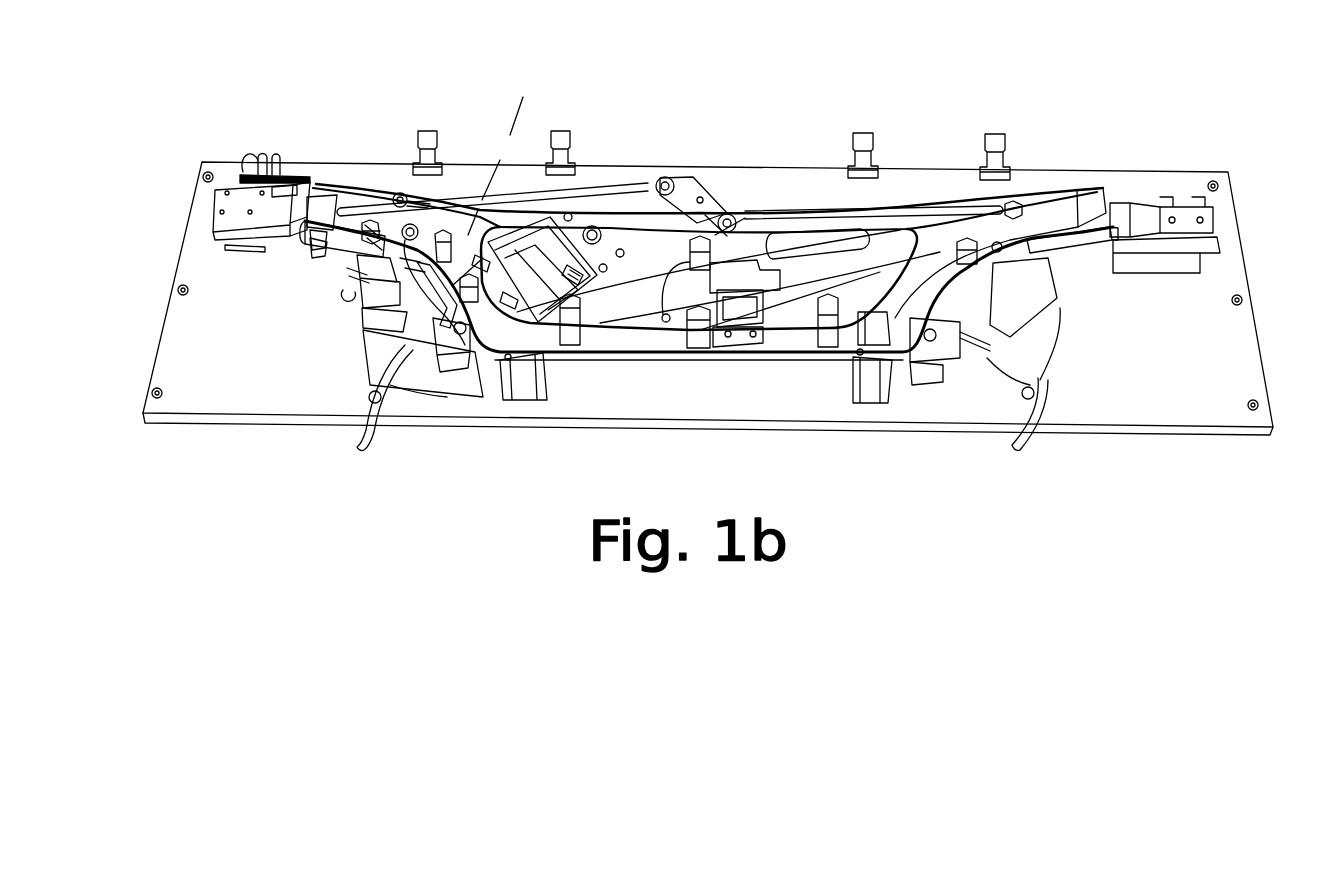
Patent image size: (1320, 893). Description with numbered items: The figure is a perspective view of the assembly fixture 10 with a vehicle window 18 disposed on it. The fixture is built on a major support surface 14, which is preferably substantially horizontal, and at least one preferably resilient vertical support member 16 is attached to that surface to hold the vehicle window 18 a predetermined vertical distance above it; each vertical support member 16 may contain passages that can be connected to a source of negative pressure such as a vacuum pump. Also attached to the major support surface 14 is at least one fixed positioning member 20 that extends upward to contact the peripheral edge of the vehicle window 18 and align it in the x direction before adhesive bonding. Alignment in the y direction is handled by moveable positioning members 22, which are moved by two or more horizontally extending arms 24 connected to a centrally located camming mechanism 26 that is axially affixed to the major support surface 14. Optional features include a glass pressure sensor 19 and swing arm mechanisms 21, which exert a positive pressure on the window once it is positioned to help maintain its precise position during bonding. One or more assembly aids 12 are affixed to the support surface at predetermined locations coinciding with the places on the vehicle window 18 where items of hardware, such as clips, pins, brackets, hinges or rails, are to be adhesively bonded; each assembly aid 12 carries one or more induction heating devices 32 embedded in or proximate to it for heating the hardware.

The assembly fixture 10 is at (672, 82).
The assembly aid 12 is at (623, 363).
The major support surface 14 is at (1116, 412).
The vertical support member 16 is at (467, 236).
The vehicle window 18 is at (1033, 197).
The glass pressure sensor 19 is at (745, 250).
The fixed positioning member 20 is at (527, 393).
The swing arm mechanism 21 is at (348, 240).
The moveable positioning member 22 is at (228, 205).
The horizontally extending arm 24 is at (580, 193).
The camming mechanism 26 is at (700, 197).
The induction heating device 32 is at (502, 150).